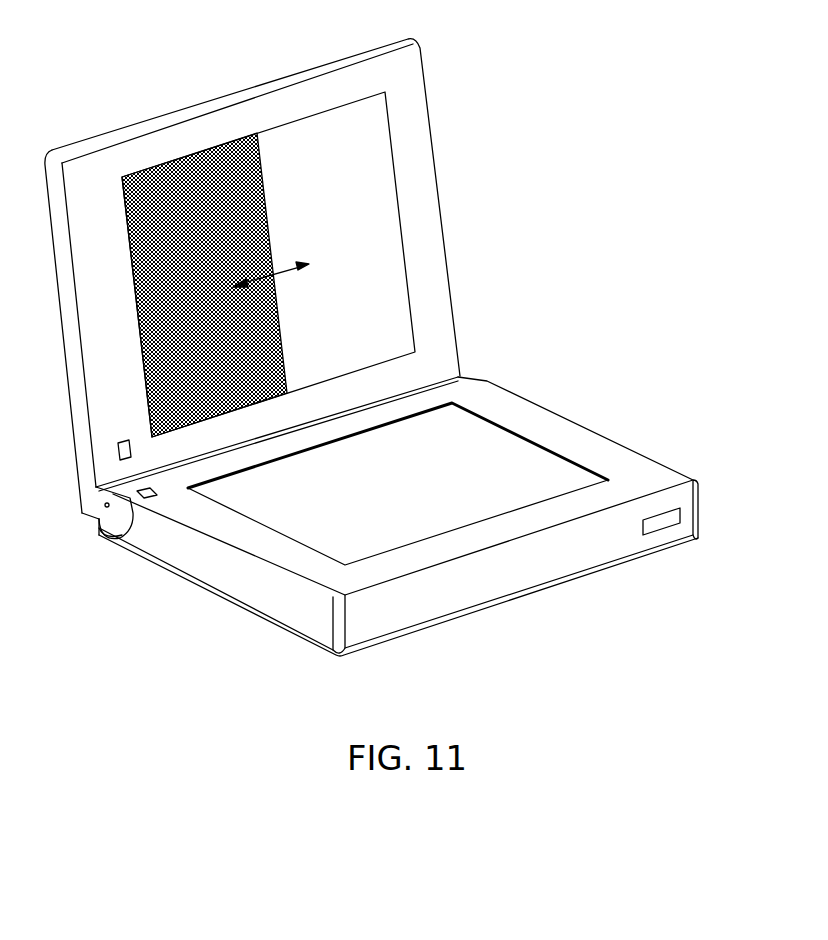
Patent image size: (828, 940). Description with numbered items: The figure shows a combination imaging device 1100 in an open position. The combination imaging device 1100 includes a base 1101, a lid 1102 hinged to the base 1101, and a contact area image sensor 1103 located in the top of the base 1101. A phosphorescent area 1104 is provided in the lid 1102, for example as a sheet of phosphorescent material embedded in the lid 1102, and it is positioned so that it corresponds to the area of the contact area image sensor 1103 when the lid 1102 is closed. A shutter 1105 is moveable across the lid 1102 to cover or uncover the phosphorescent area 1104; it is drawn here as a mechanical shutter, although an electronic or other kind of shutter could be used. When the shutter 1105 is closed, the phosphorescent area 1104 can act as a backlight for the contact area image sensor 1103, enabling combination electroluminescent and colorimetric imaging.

The combination imaging device 1100 is at (610, 200).
The base 1101 is at (225, 585).
The lid 1102 is at (428, 190).
The contact area image sensor 1103 is at (435, 500).
The phosphorescent area 1104 is at (342, 191).
The shutter 1105 is at (183, 168).